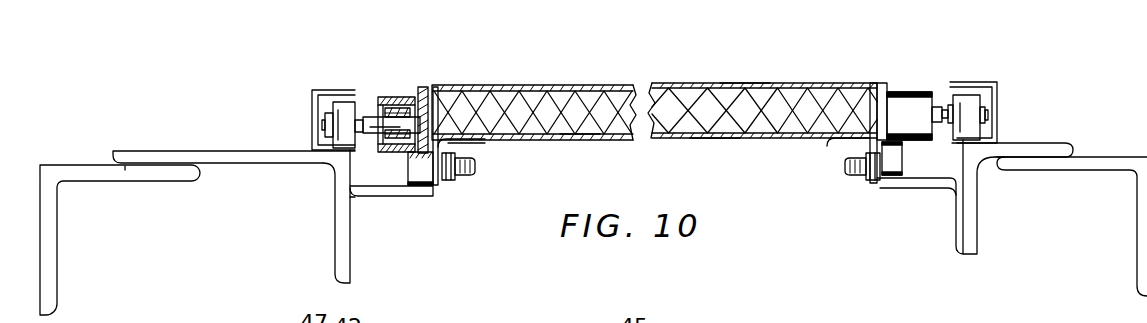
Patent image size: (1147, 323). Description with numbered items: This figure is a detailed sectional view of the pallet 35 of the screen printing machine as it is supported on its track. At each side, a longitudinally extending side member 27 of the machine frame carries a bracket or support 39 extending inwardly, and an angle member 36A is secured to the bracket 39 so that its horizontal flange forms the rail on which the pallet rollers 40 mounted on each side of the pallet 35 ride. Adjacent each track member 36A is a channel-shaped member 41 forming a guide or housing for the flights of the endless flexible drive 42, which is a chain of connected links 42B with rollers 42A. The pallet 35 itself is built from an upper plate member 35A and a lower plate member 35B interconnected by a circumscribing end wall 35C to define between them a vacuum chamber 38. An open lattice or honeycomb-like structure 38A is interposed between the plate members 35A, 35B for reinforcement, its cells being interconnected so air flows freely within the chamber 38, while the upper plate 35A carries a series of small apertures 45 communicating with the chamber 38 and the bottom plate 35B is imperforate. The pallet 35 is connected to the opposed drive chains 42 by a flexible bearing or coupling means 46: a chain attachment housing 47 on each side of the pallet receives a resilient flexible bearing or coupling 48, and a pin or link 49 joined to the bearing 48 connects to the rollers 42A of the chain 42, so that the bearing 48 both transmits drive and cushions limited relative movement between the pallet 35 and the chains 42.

The side member 27 is at (57, 262).
The pallet 35 is at (525, 70).
The upper plate member 35A is at (743, 86).
The lower plate member 35B is at (713, 137).
The end wall 35C is at (882, 85).
The angle member 36A is at (370, 198).
The vacuum chamber 38 is at (587, 125).
The open lattice or honeycomb-like structure 38A is at (670, 92).
The bracket or support 39 is at (235, 151).
The pallet roller 40 is at (428, 180).
The channel-shaped member 41 is at (333, 89).
The endless flexible drive 42 is at (352, 90).
The roller 42A is at (345, 135).
The link 42B is at (324, 126).
The aperture 45 is at (585, 87).
The flexible bearing or coupling means 46 is at (405, 92).
The chain attachment housing 47 is at (375, 147).
The flexible bearing or coupling 48 is at (420, 92).
The pin or link 49 is at (370, 118).